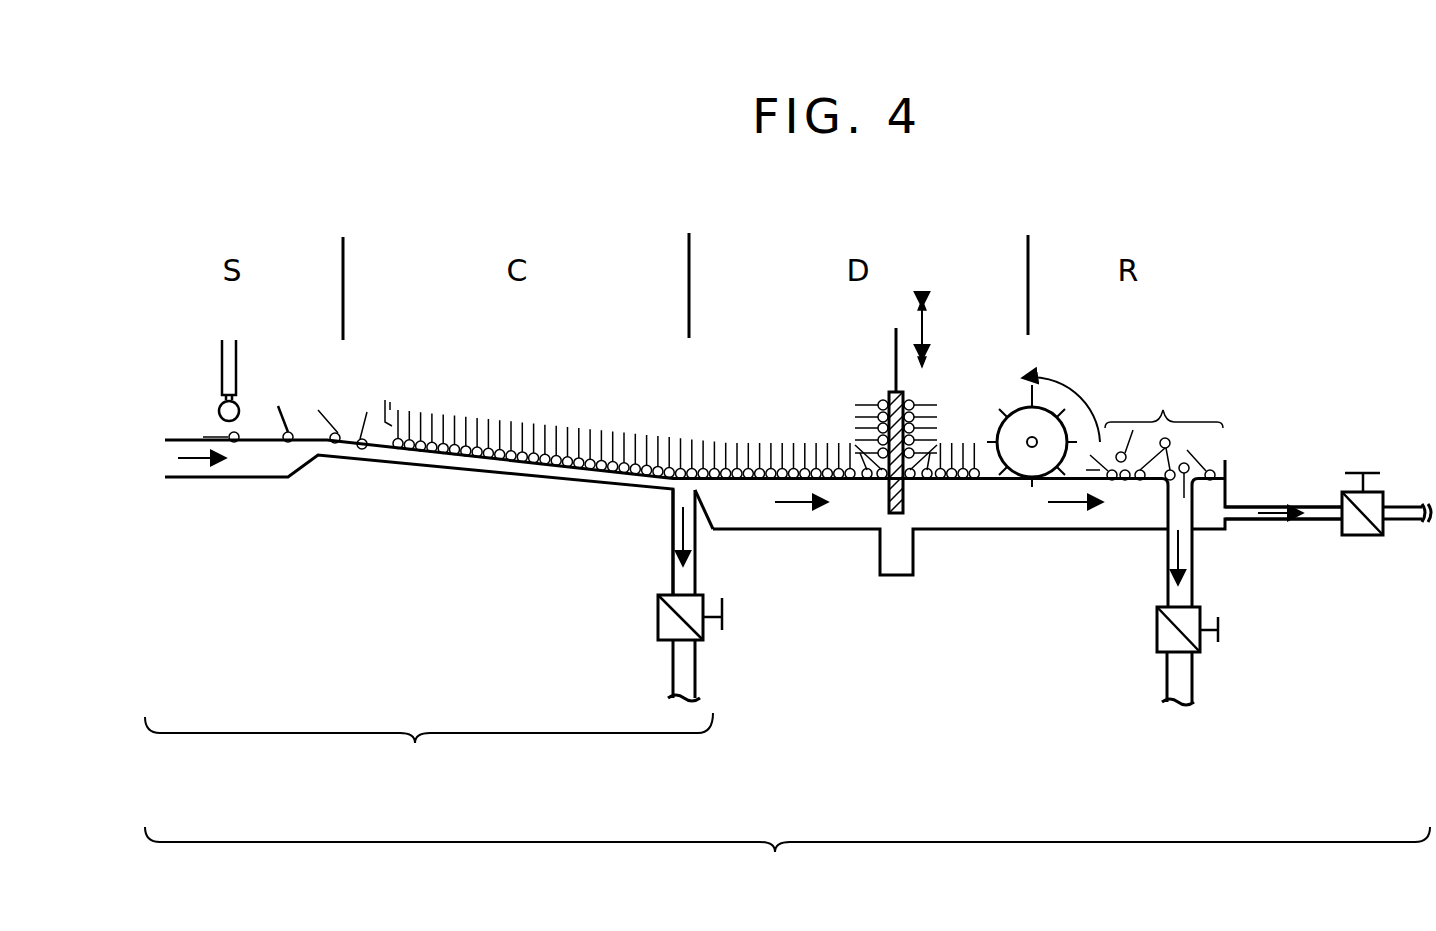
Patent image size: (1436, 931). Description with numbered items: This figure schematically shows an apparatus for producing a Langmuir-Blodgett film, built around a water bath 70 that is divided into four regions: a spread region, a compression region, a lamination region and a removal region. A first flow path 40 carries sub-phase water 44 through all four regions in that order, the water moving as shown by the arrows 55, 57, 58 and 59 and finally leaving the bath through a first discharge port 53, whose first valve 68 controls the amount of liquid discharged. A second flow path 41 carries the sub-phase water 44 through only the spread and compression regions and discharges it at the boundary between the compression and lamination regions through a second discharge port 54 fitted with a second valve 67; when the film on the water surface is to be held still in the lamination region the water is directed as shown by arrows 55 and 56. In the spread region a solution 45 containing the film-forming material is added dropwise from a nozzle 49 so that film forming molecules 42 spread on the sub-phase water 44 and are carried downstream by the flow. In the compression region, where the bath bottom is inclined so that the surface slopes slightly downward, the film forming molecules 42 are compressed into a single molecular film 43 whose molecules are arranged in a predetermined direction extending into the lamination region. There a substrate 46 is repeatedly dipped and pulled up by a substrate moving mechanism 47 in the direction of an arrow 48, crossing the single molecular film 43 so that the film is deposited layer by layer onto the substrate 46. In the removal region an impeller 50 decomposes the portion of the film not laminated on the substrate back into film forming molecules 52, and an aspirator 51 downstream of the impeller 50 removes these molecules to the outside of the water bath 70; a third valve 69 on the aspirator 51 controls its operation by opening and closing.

The first flow path 40 is at (787, 861).
The second flow path 41 is at (429, 748).
The film forming molecules 42 is at (285, 417).
The single molecular film 43 is at (385, 400).
The sub-phase water 44 is at (267, 463).
The solution 45 is at (222, 418).
The substrate 46 is at (889, 395).
The substrate moving mechanism 47 is at (893, 346).
The arrow 48 is at (925, 333).
The nozzle 49 is at (222, 362).
The impeller 50 is at (997, 432).
The aspirator 51 is at (1167, 557).
The film forming molecules 52 is at (1154, 435).
The first discharge port 53 is at (1254, 502).
The second discharge port 54 is at (673, 537).
The arrow 55 is at (210, 460).
The arrow 56 is at (697, 537).
The arrow 57 is at (797, 506).
The arrow 58 is at (1078, 508).
The arrow 59 is at (1290, 520).
The second valve 67 is at (658, 631).
The first valve 68 is at (1367, 537).
The third valve 69 is at (1157, 632).
The water bath 70 is at (1250, 405).